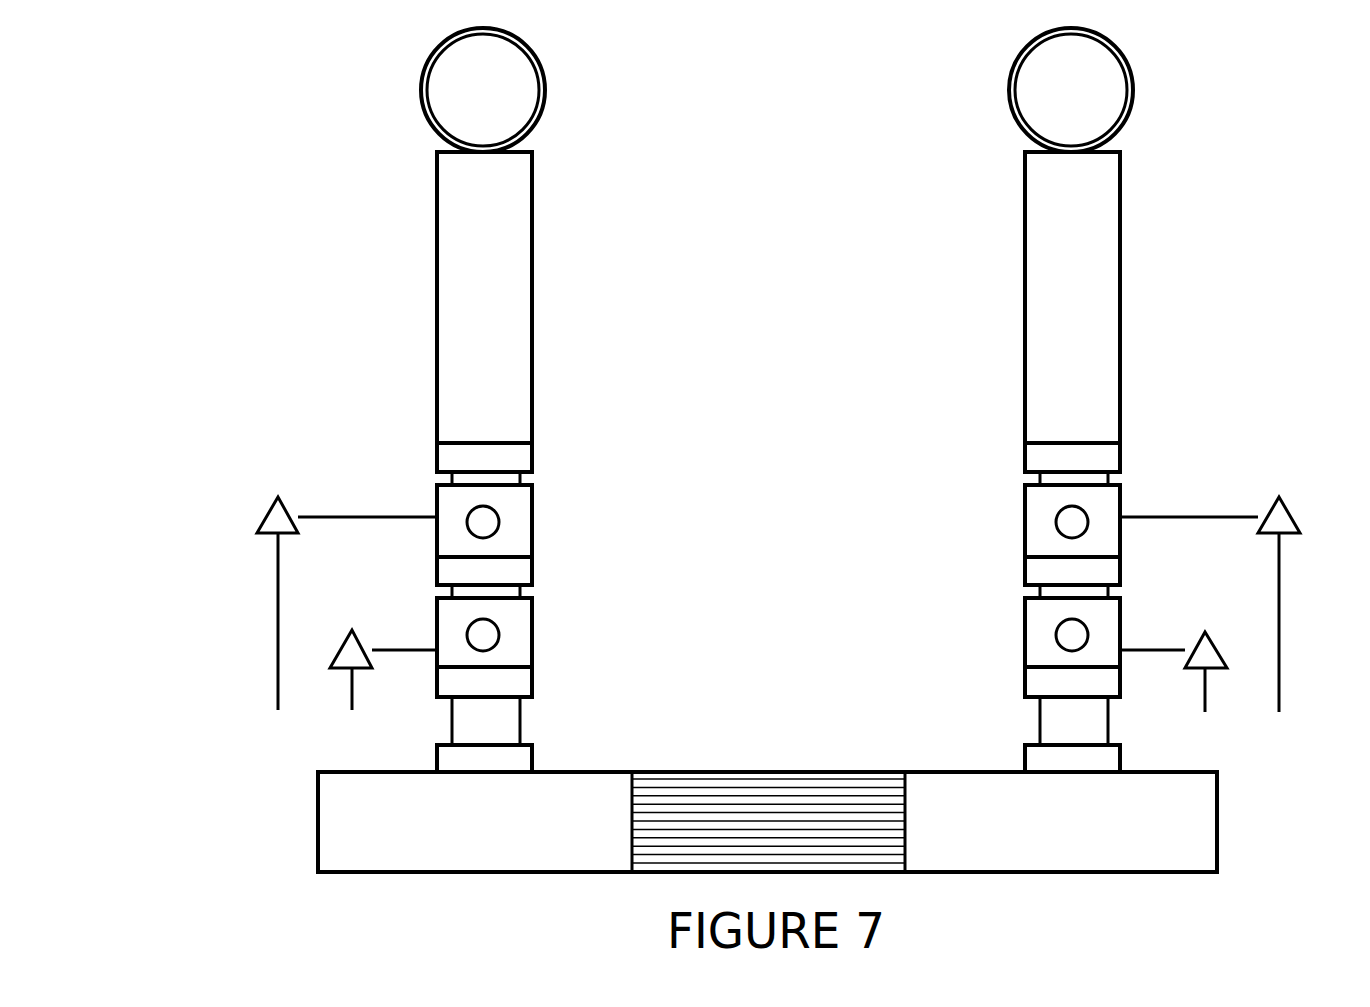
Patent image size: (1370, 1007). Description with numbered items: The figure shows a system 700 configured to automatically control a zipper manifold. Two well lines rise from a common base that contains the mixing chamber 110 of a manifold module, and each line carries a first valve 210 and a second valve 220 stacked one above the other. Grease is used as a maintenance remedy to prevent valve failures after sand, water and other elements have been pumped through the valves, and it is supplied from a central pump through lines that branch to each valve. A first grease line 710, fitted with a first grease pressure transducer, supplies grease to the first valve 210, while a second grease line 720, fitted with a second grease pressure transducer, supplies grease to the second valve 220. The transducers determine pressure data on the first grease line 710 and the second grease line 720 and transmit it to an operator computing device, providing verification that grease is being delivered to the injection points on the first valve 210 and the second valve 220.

The system 700 is at (326, 91).
The mixing chamber 110 is at (824, 783).
The first valve 210 is at (532, 632).
The second valve 220 is at (532, 512).
The first grease line 710 is at (400, 650).
The second grease line 720 is at (375, 517).